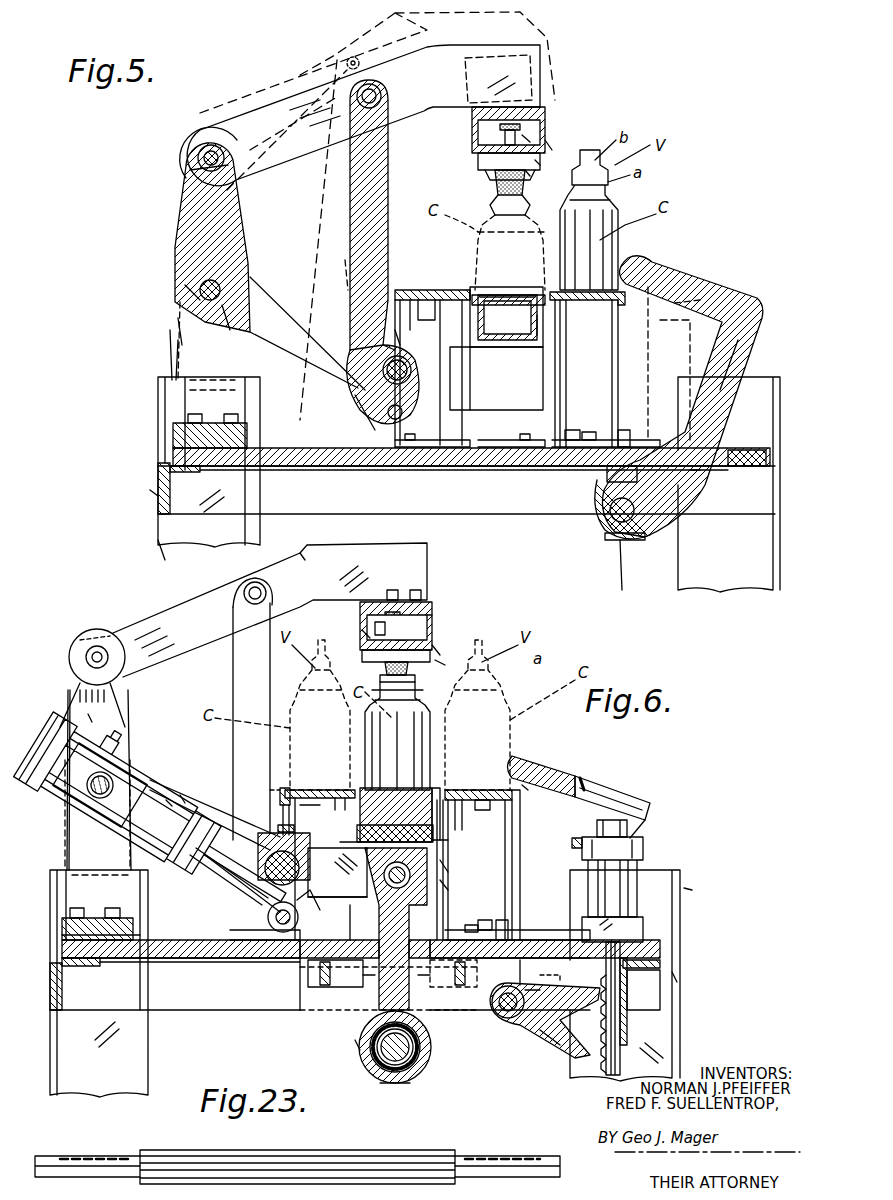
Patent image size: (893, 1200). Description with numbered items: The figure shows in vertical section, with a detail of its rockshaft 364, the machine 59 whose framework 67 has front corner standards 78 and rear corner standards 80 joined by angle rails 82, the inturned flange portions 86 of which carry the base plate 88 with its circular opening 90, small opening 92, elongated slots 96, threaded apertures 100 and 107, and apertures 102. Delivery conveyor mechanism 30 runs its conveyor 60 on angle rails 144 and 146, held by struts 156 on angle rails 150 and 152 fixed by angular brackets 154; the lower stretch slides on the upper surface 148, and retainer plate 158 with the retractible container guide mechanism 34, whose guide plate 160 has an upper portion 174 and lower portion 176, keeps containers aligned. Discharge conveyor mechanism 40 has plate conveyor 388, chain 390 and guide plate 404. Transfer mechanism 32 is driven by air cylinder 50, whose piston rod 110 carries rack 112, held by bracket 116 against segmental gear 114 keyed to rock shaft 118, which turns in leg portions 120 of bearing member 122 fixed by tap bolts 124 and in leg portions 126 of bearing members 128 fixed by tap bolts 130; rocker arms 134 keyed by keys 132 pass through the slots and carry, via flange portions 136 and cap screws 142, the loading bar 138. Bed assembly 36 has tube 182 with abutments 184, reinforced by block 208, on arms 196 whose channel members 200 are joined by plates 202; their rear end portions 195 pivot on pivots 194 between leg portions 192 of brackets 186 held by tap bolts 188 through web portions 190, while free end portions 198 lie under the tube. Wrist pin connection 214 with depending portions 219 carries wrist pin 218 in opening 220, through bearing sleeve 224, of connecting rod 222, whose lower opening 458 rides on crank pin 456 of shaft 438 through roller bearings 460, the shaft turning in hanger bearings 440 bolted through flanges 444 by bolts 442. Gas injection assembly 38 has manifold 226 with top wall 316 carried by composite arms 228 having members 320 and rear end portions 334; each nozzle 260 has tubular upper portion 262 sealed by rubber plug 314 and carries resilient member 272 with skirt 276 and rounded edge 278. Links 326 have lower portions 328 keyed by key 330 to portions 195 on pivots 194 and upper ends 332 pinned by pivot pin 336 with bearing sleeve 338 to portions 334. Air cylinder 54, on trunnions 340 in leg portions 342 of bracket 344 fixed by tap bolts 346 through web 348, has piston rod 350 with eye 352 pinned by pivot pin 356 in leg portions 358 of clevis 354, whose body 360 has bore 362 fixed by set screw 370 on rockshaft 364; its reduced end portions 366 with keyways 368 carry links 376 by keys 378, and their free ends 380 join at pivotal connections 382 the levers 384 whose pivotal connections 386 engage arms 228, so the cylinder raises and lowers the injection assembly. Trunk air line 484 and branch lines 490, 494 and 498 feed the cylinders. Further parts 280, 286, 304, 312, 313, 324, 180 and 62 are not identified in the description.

In FIG. 5, the composite arm 228 is at (300, 90).
In FIG. 6, the composite arm 228 is at (180, 595).
In FIG. 5, the pivotal connection 386 is at (372, 90).
In FIG. 6, the pivotal connection 386 is at (250, 590).
In FIG. 5, the member of manifold supporting arm 320 is at (548, 52).
In FIG. 6, the member of manifold supporting arm 320 is at (360, 552).
In FIG. 5, the manifold 226 is at (546, 70).
In FIG. 6, the manifold 226 is at (435, 620).
In FIG. 5, the rear end portion of arm 334 is at (218, 130).
In FIG. 6, the rear end portion of arm 334 is at (78, 645).
In FIG. 6, the top wall of manifold 316 is at (395, 610).
In FIG. 5, the tubular upper portion of nozzle 262 is at (522, 135).
In FIG. 6, the tubular upper portion of nozzle 262 is at (362, 638).
In FIG. 5, the gas injection assembly 38 is at (550, 118).
In FIG. 6, the gas injection assembly 38 is at (440, 612).
In FIG. 5, the rubber plug 314 is at (500, 128).
In FIG. 6, the rubber plug 314 is at (390, 605).
In FIG. 5, the nozzle 260 is at (492, 132).
In FIG. 6, the nozzle 260 is at (375, 628).
In FIG. 5, the head body 286 is at (472, 148).
In FIG. 6, the head body 286 is at (400, 630).
In FIG. 5, the head wall 280 is at (548, 148).
In FIG. 6, the head wall 280 is at (440, 655).
In FIG. 5, the coupling 304 is at (485, 162).
In FIG. 6, the coupling 304 is at (435, 662).
In FIG. 5, the skirt portion 276 is at (495, 180).
In FIG. 6, the skirt portion 276 is at (385, 675).
In FIG. 5, the rounded lower marginal edge portion 278 is at (505, 198).
In FIG. 5, the clamp ring 312 is at (530, 172).
In FIG. 6, the clamp ring 312 is at (372, 665).
In FIG. 5, the clamp screw 313 is at (538, 165).
In FIG. 5, the bearing sleeve 338 is at (200, 150).
In FIG. 6, the bearing sleeve 338 is at (86, 657).
In FIG. 5, the pivot pin 336 is at (202, 158).
In FIG. 6, the pivot pin 336 is at (90, 665).
In FIG. 5, the upper end of link 332 is at (195, 170).
In FIG. 6, the upper end of link 332 is at (80, 640).
In FIG. 5, the link 326 is at (190, 222).
In FIG. 6, the link 326 is at (78, 688).
In FIG. 5, the lever 384 is at (385, 200).
In FIG. 6, the lever 384 is at (233, 672).
In FIG. 5, the discharge conveyor mechanism 40 is at (400, 285).
In FIG. 6, the discharge conveyor mechanism 40 is at (310, 790).
In FIG. 5, the rear end portion of arm 195 is at (222, 305).
In FIG. 5, the key 330 is at (300, 300).
In FIG. 5, the pivot 194 is at (185, 285).
In FIG. 5, the lower portion of link 328 is at (195, 292).
In FIG. 6, the lower portion of link 328 is at (66, 830).
In FIG. 5, the upstanding leg portion 192 is at (178, 318).
In FIG. 5, the U-shaped bearing bracket 186 is at (170, 346).
In FIG. 5, the composite arm 196 is at (262, 352).
In FIG. 5, the channel-shaped member 200 is at (300, 318).
In FIG. 6, the channel-shaped member 200 is at (182, 795).
In FIG. 5, the tap bolt 188 is at (188, 418).
In FIG. 5, the horizontal web portion 190 is at (175, 437).
In FIG. 5, the machine 59 is at (150, 496).
In FIG. 6, the machine 59 is at (690, 890).
In FIG. 5, the inturned flange portion 86 is at (165, 480).
In FIG. 6, the inturned flange portion 86 is at (90, 965).
In FIG. 5, the angle rail 82 is at (160, 508).
In FIG. 6, the angle rail 82 is at (125, 1005).
In FIG. 5, the rear corner standard 80 is at (165, 525).
In FIG. 6, the rear corner standard 80 is at (130, 1055).
In FIG. 5, the framework 67 is at (160, 558).
In FIG. 6, the framework 67 is at (677, 977).
In FIG. 5, the angle rail 146 is at (410, 290).
In FIG. 6, the angle rail 146 is at (275, 790).
In FIG. 5, the abutment 184 is at (470, 290).
In FIG. 5, the plate type endless conveyor 388 is at (430, 295).
In FIG. 6, the plate type endless conveyor 388 is at (298, 790).
In FIG. 5, the rectangular tube 182 is at (505, 290).
In FIG. 6, the rectangular tube 182 is at (445, 868).
In FIG. 5, the loading bar 138 is at (555, 268).
In FIG. 6, the loading bar 138 is at (560, 760).
In FIG. 5, the upper portion of guide plate 174 is at (515, 297).
In FIG. 6, the upper portion of guide plate 174 is at (440, 800).
In FIG. 5, the guide plate 160 is at (535, 322).
In FIG. 5, the angle rail 144 is at (415, 320).
In FIG. 6, the angle rail 144 is at (465, 815).
In FIG. 5, the key 378 is at (408, 340).
In FIG. 5, the keyway 368 is at (385, 352).
In FIG. 23, the keyway 368 is at (75, 1158).
In FIG. 5, the link 376 is at (300, 340).
In FIG. 5, the end portion of rock shaft 366 is at (395, 380).
In FIG. 6, the end portion of rock shaft 366 is at (281, 857).
In FIG. 23, the end portion of rock shaft 366 is at (50, 1162).
In FIG. 5, the depending free end of link 380 is at (400, 402).
In FIG. 5, the pivotal connection 382 is at (358, 395).
In FIG. 5, the angular bracket 154 is at (625, 440).
In FIG. 6, the angular bracket 154 is at (418, 938).
In FIG. 5, the angle rail 150 is at (410, 443).
In FIG. 6, the angle rail 150 is at (472, 925).
In FIG. 5, the retractible container guide mechanism 34 is at (540, 357).
In FIG. 6, the retractible container guide mechanism 34 is at (470, 790).
In FIG. 5, the plate 202 is at (490, 370).
In FIG. 6, the plate 202 is at (360, 845).
In FIG. 5, the strut 156 is at (480, 400).
In FIG. 6, the strut 156 is at (355, 920).
In FIG. 5, the free end portion of arm 198 is at (562, 362).
In FIG. 6, the free end portion of arm 198 is at (505, 893).
In FIG. 5, the conveyor 60 is at (570, 440).
In FIG. 6, the conveyor 60 is at (470, 800).
In FIG. 5, the rail fastener 62 is at (588, 432).
In FIG. 6, the rail fastener 62 is at (485, 812).
In FIG. 5, the delivery conveyor mechanism 30 is at (618, 355).
In FIG. 6, the delivery conveyor mechanism 30 is at (490, 785).
In FIG. 5, the guide or retainer plate 158 is at (630, 300).
In FIG. 6, the guide or retainer plate 158 is at (520, 790).
In FIG. 5, the angle rail 152 is at (620, 420).
In FIG. 6, the angle rail 152 is at (500, 935).
In FIG. 5, the rearwardly projecting flange portion 136 is at (700, 292).
In FIG. 6, the rearwardly projecting flange portion 136 is at (610, 795).
In FIG. 5, the rocker arm 134 is at (745, 348).
In FIG. 6, the rocker arm 134 is at (638, 826).
In FIG. 5, the container transfer or loading mechanism 32 is at (762, 298).
In FIG. 6, the container transfer or loading mechanism 32 is at (655, 797).
In FIG. 5, the upper surface of plate 148 is at (303, 470).
In FIG. 6, the upper surface of plate 148 is at (215, 966).
In FIG. 5, the base plate 88 is at (325, 466).
In FIG. 6, the base plate 88 is at (160, 960).
In FIG. 5, the endless chain 390 is at (358, 318).
In FIG. 6, the endless chain 390 is at (335, 800).
In FIG. 5, the threaded aperture 107 is at (600, 472).
In FIG. 5, the angular bearing member 128 is at (605, 480).
In FIG. 5, the tap bolt 130 is at (598, 520).
In FIG. 5, the key 132 is at (615, 525).
In FIG. 5, the depending leg portion 126 is at (632, 538).
In FIG. 5, the elongated slot 96 is at (712, 470).
In FIG. 5, the rock shaft 118 is at (622, 545).
In FIG. 6, the rock shaft 118 is at (540, 1035).
In FIG. 5, the front corner standard 78 is at (755, 585).
In FIG. 6, the front corner standard 78 is at (665, 1062).
In FIG. 5, the guide plate 404 is at (345, 270).
In FIG. 6, the guide plate 404 is at (268, 790).
In FIG. 5, the container-supporting bed assembly 36 is at (610, 210).
In FIG. 6, the container-supporting bed assembly 36 is at (360, 780).
In FIG. 6, the cam plate 324 is at (360, 598).
In FIG. 6, the funnel-shaped member 272 is at (410, 678).
In FIG. 6, the trunk air line 484 is at (105, 718).
In FIG. 6, the trunnion 340 is at (112, 778).
In FIG. 6, the air pressure operated cylinder 54 is at (168, 795).
In FIG. 6, the branch line 498 is at (208, 770).
In FIG. 6, the set screw 370 is at (280, 830).
In FIG. 6, the body portion of clevis 360 is at (250, 833).
In FIG. 6, the upstanding leg portion 342 is at (80, 850).
In FIG. 6, the U-shaped bracket 344 is at (70, 875).
In FIG. 6, the tap bolt 346 is at (112, 908).
In FIG. 6, the horizontal web portion 348 is at (135, 920).
In FIG. 6, the piston rod 350 is at (240, 875).
In FIG. 6, the rock shaft 364 is at (248, 888).
In FIG. 23, the rock shaft 364 is at (355, 1150).
In FIG. 6, the pivot pin 356 is at (268, 918).
In FIG. 6, the horizontal bore 362 is at (235, 862).
In FIG. 6, the clevis 354 is at (250, 840).
In FIG. 6, the eye or bearing member 352 is at (300, 970).
In FIG. 6, the outstanding flange 444 is at (300, 1010).
In FIG. 6, the bolt 442 is at (325, 1005).
In FIG. 6, the threaded aperture 100 is at (360, 1000).
In FIG. 6, the circular opening 90 is at (380, 990).
In FIG. 6, the connecting rod 222 is at (365, 1050).
In FIG. 6, the circular opening 458 is at (378, 1068).
In FIG. 6, the eccentric or crank pin 456 is at (395, 1083).
In FIG. 6, the roller bearing 460 is at (425, 1068).
In FIG. 6, the shaft 438 is at (428, 1085).
In FIG. 6, the aperture 102 is at (470, 975).
In FIG. 6, the hanger bearing 440 is at (340, 1055).
In FIG. 6, the block 180 is at (362, 832).
In FIG. 6, the lower portion of guide plate 176 is at (448, 843).
In FIG. 6, the wrist pin connection 214 is at (362, 855).
In FIG. 6, the wrist pin 218 is at (358, 870).
In FIG. 6, the bearing sleeve 224 is at (372, 880).
In FIG. 6, the depending leg portion 358 is at (305, 905).
In FIG. 6, the block member 208 is at (395, 790).
In FIG. 6, the depending portion 219 is at (448, 885).
In FIG. 6, the circular opening 220 is at (410, 878).
In FIG. 6, the cap screw 142 is at (588, 782).
In FIG. 6, the branch line 490 is at (575, 840).
In FIG. 6, the air pressure operated cylinder 50 is at (640, 870).
In FIG. 6, the small opening 92 is at (645, 930).
In FIG. 6, the branch line 494 is at (643, 990).
In FIG. 6, the angular bracket 116 is at (628, 1028).
In FIG. 6, the piston rod 110 is at (630, 1050).
In FIG. 6, the tap bolt 124 is at (500, 1008).
In FIG. 6, the depending leg portion 120 is at (512, 1018).
In FIG. 6, the segmental gear 114 is at (572, 1045).
In FIG. 6, the rack 112 is at (600, 1070).
In FIG. 6, the inverted U-shaped bearing member 122 is at (575, 985).